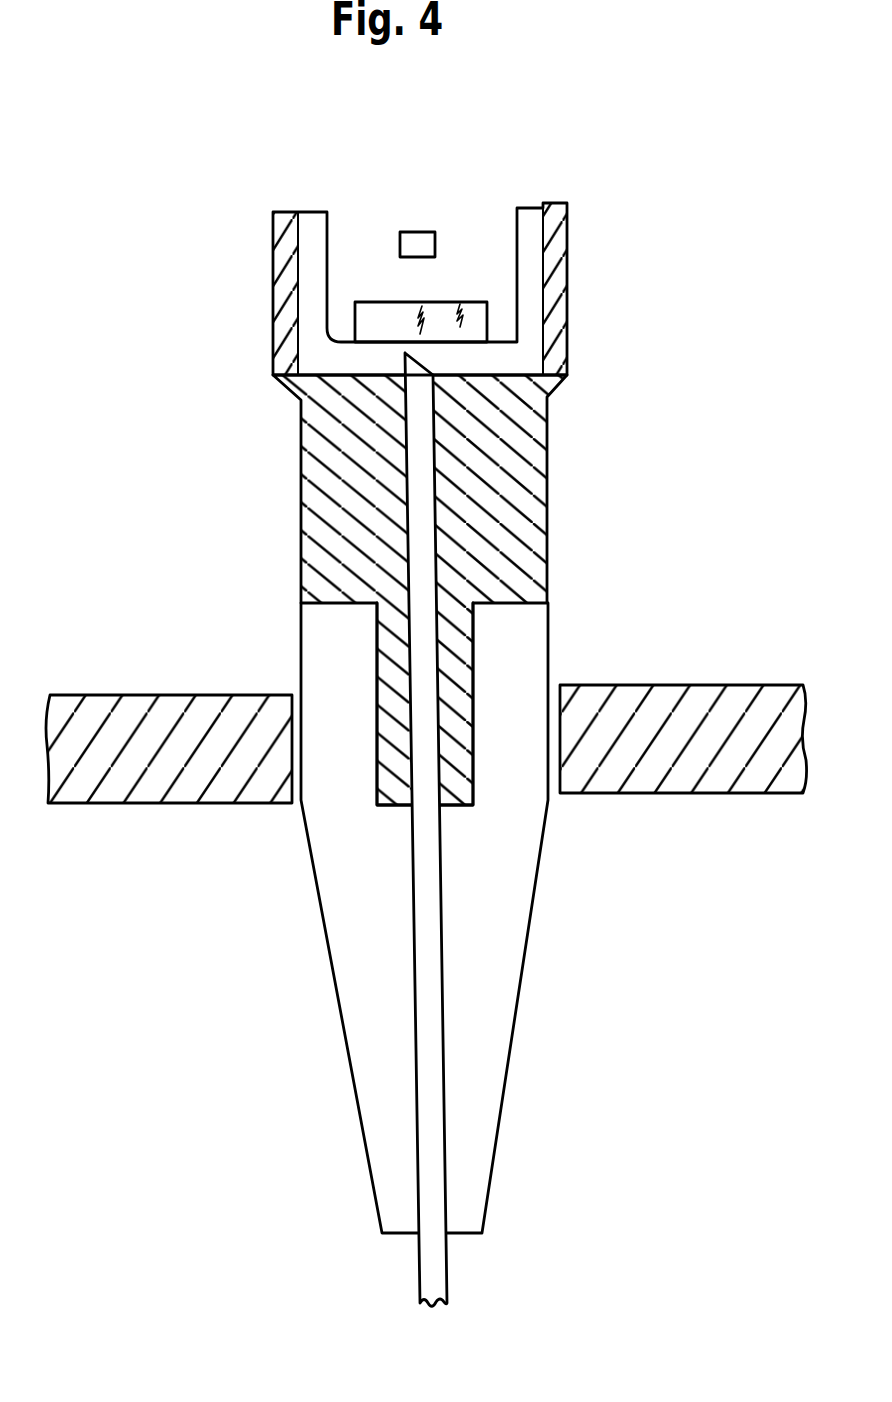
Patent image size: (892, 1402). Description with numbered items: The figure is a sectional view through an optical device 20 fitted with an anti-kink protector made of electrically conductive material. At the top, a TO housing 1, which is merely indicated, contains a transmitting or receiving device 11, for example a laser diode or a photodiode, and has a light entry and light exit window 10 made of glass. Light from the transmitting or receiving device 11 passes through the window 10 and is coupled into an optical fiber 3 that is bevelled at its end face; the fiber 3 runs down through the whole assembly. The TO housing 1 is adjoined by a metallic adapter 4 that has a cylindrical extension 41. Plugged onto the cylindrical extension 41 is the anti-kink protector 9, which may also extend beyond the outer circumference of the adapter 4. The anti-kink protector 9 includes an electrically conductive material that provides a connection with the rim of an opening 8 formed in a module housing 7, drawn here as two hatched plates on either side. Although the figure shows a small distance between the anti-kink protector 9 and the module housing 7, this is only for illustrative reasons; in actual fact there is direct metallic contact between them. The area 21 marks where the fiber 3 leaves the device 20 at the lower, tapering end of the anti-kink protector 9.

The TO housing 1 is at (517, 280).
The optical fiber 3 is at (440, 1265).
The metallic adapter 4 is at (533, 493).
The module housing 7 is at (665, 777).
The opening 8 is at (294, 811).
The anti-kink protector 9 is at (505, 962).
The light entry and light exit window 10 is at (477, 327).
The transmitting or receiving device 11 is at (424, 240).
The optical device 20 is at (615, 529).
The area 21 is at (569, 822).
The cylindrical extension 41 is at (457, 690).